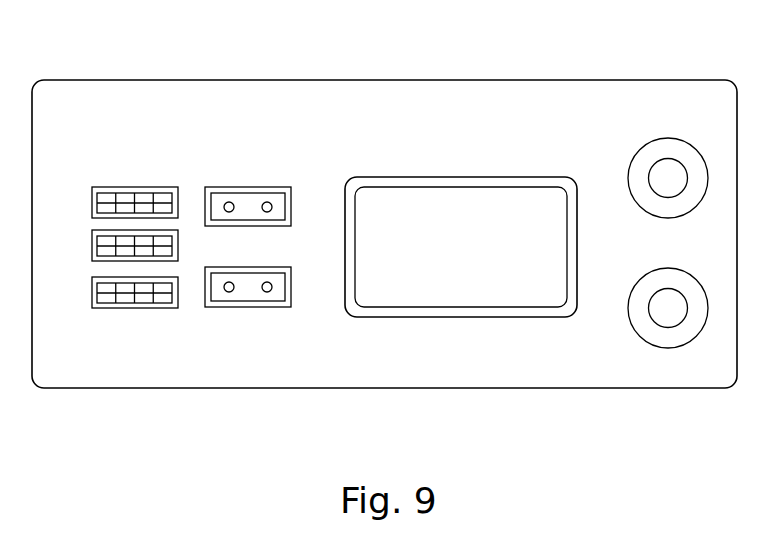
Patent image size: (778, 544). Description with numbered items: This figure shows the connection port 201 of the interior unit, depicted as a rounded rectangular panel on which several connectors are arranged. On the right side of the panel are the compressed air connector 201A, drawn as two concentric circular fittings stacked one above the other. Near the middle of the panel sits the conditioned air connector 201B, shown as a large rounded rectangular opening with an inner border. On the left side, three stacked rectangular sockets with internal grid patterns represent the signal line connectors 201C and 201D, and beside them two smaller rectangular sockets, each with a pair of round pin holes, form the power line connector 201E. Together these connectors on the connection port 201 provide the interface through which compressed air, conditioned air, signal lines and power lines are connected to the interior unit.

The connection port 201 is at (638, 72).
The compressed air connector 201A is at (667, 340).
The conditioned air connector 201B is at (486, 314).
The signal line connector 201C is at (92, 258).
The signal line connector 201D is at (135, 308).
The power line connector 201E is at (252, 307).